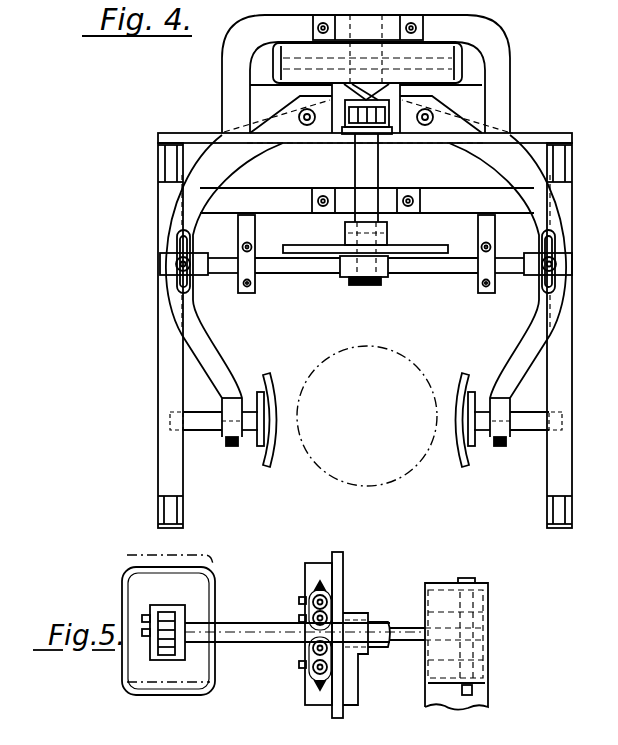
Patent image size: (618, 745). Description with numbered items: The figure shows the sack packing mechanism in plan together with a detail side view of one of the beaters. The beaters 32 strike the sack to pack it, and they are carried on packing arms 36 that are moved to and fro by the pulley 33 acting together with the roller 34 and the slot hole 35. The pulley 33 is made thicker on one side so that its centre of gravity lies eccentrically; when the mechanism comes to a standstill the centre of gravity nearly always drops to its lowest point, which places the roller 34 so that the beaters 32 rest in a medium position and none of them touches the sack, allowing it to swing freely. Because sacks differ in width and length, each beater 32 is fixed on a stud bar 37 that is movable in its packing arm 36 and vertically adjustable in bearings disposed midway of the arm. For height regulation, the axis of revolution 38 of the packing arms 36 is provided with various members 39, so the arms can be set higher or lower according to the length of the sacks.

In FIG. 4, the beater 32 is at (272, 456).
In FIG. 5, the beater 32 is at (212, 600).
In FIG. 4, the pulley 33 is at (425, 250).
In FIG. 5, the pulley 33 is at (343, 576).
In FIG. 4, the roller 34 is at (359, 286).
In FIG. 5, the roller 34 is at (470, 578).
In FIG. 4, the slot hole 35 is at (388, 275).
In FIG. 5, the slot hole 35 is at (307, 576).
In FIG. 4, the packing arm 36 is at (249, 157).
In FIG. 5, the packing arm 36 is at (405, 627).
In FIG. 4, the stud bar 37 is at (196, 429).
In FIG. 4, the axis of revolution 38 is at (366, 110).
In FIG. 5, the member 39 is at (428, 658).